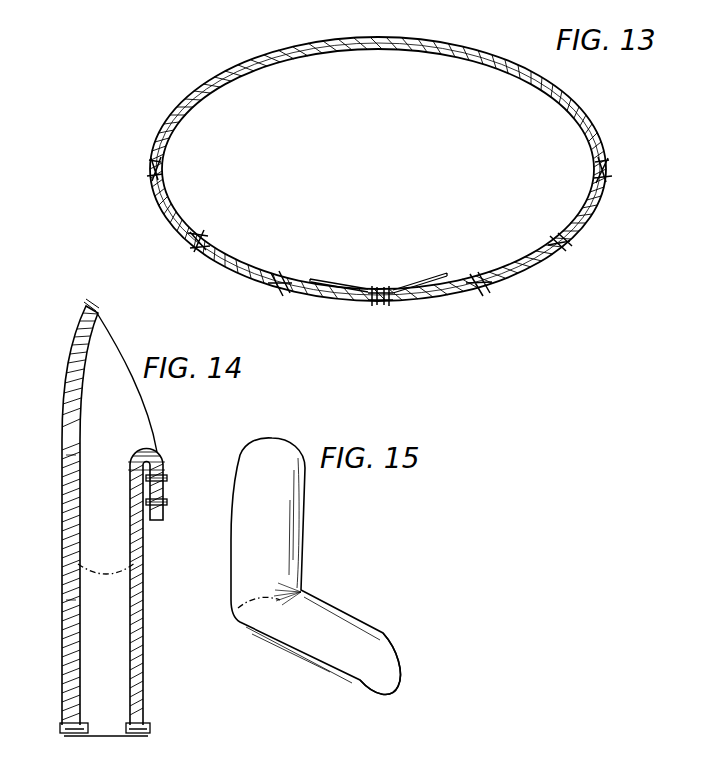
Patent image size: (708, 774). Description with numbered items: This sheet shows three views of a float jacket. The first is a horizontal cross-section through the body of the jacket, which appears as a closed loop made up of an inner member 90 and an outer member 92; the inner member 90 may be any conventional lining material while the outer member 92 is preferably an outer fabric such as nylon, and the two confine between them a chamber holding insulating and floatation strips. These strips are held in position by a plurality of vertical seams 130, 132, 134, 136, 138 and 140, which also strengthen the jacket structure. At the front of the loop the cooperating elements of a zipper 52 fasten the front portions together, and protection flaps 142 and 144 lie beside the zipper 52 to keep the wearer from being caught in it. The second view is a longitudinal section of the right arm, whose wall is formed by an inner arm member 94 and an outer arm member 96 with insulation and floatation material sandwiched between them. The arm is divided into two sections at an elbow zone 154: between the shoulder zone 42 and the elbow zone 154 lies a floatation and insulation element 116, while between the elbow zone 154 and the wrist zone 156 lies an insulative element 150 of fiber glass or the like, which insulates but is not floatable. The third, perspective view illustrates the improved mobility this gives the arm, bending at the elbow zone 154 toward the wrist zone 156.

In FIG. 14, the shoulder zone 42 is at (90, 304).
In FIG. 13, the zipper 52 is at (378, 302).
In FIG. 13, the inner member 90 is at (247, 70).
In FIG. 13, the outer member 92 is at (284, 28).
In FIG. 14, the inner arm member 94 is at (82, 645).
In FIG. 14, the outer arm member 96 is at (66, 604).
In FIG. 14, the floatation and insulation element 116 is at (96, 314).
In FIG. 13, the vertical seam 130 is at (153, 169).
In FIG. 13, the vertical seam 132 is at (199, 244).
In FIG. 13, the vertical seam 134 is at (278, 288).
In FIG. 13, the vertical seam 136 is at (478, 286).
In FIG. 13, the vertical seam 138 is at (557, 246).
In FIG. 13, the vertical seam 140 is at (605, 167).
In FIG. 13, the protection flap 142 is at (333, 280).
In FIG. 13, the protection flap 144 is at (414, 280).
In FIG. 14, the insulative element 150 is at (66, 660).
In FIG. 14, the elbow zone 154 is at (108, 552).
In FIG. 15, the elbow zone 154 is at (233, 597).
In FIG. 14, the wrist zone 156 is at (150, 736).
In FIG. 15, the wrist zone 156 is at (384, 637).